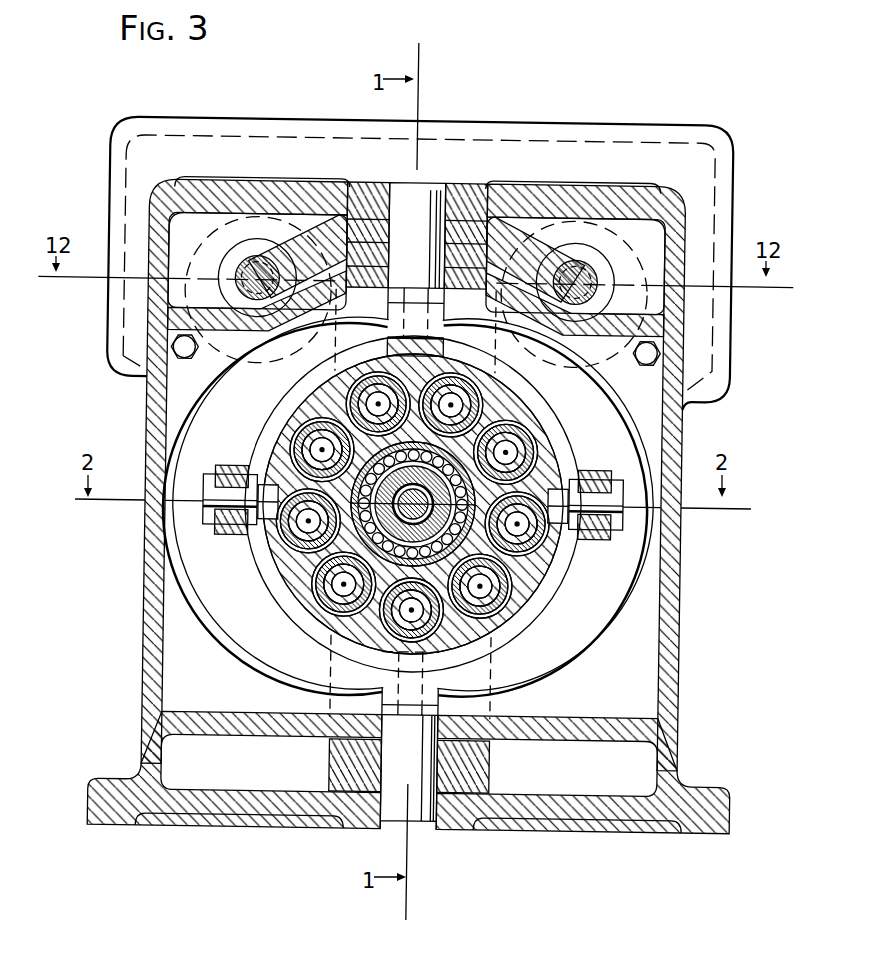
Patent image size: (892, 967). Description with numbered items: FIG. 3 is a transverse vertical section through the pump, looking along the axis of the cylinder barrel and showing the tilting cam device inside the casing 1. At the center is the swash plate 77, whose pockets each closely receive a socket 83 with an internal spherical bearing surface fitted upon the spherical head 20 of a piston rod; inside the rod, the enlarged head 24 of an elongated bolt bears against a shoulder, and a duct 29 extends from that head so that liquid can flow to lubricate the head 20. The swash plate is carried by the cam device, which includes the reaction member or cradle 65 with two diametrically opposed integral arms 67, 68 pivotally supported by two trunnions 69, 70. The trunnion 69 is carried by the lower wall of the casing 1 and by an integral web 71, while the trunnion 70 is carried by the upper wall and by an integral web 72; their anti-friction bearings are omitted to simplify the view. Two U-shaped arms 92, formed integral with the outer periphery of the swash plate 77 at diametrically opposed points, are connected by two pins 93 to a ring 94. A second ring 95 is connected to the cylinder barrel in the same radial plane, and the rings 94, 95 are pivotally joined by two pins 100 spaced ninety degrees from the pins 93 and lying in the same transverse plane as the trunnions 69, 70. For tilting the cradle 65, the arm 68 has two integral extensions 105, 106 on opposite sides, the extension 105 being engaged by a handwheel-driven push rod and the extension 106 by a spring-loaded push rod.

The casing 1 is at (150, 640).
The spherical head 20 is at (570, 552).
The enlarged head 24 is at (352, 593).
The duct 29 is at (318, 446).
The cradle 65 is at (269, 548).
The arm 67 is at (332, 760).
The arm 68 is at (366, 236).
The trunnion 69 is at (416, 778).
The trunnion 70 is at (426, 236).
The web 71 is at (593, 737).
The web 72 is at (646, 322).
The swash plate 77 is at (353, 630).
The socket 83 is at (497, 598).
The U-shaped arm 92 is at (393, 302).
The pin 93 is at (428, 326).
The ring 94 is at (250, 588).
The ring 95 is at (212, 528).
The pin 100 is at (213, 495).
The extension 105 is at (283, 250).
The extension 106 is at (547, 254).